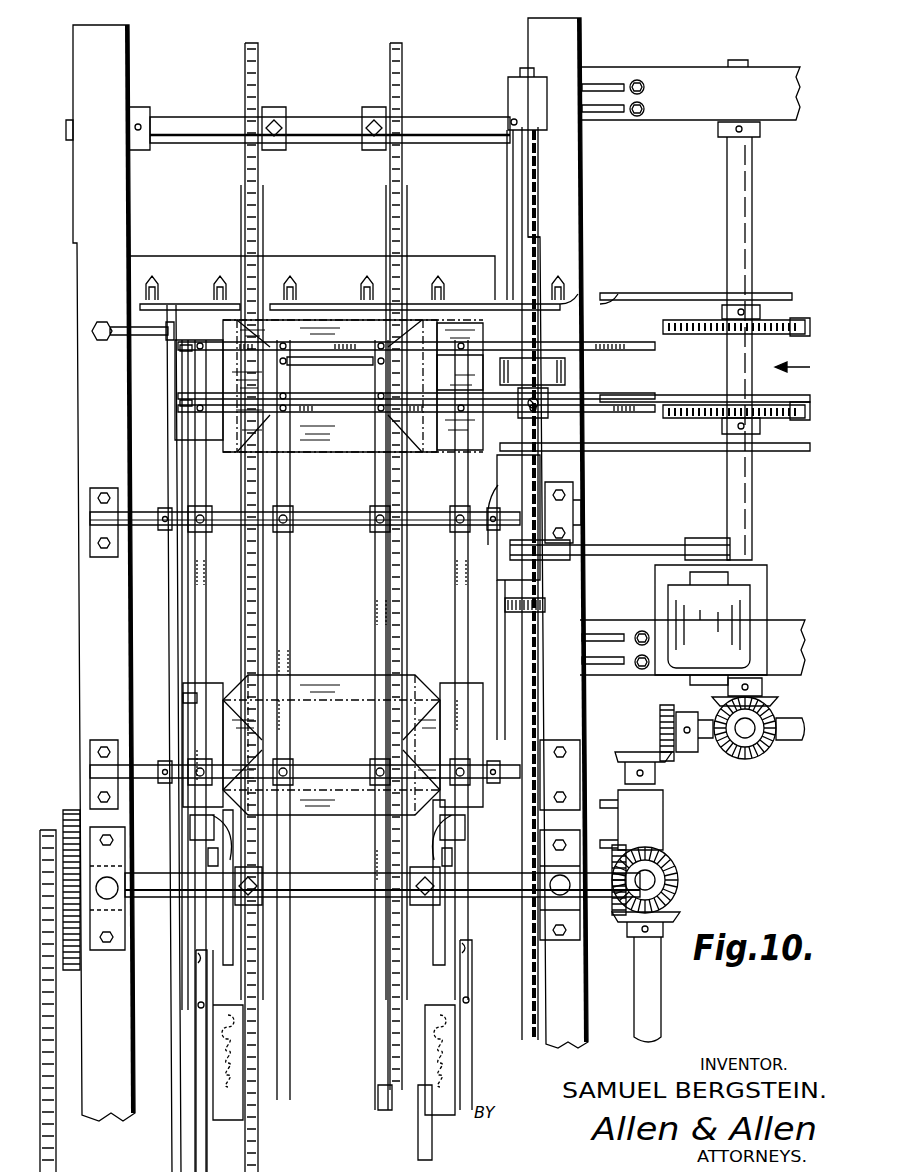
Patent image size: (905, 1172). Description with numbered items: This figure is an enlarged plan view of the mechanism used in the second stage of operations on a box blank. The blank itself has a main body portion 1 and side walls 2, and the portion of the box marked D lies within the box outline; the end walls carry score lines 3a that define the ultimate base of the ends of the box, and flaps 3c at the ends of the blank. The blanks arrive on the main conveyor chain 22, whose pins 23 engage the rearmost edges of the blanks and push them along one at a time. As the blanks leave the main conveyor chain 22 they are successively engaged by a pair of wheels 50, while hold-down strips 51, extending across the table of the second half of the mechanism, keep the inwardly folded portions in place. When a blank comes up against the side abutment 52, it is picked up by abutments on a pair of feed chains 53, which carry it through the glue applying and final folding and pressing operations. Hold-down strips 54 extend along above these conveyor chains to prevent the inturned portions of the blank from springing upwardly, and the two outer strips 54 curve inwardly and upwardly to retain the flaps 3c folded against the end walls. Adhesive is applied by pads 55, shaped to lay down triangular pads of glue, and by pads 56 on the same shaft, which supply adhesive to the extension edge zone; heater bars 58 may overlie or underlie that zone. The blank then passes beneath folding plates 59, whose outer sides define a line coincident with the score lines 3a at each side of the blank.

The main body portion 1 is at (340, 565).
The side walls 2 is at (329, 563).
The box section D is at (305, 381).
The score lines 3a is at (426, 368).
The flaps 3c is at (198, 714).
The endless feed chains 22 is at (704, 320).
The pins 23 is at (762, 325).
The wheels 50 is at (567, 364).
The hold-down strips 51 is at (628, 336).
The side abutment 52 is at (172, 462).
The feed chains 53 is at (330, 240).
The hold-down strips 54 is at (195, 638).
The pads 55 is at (198, 832).
The pads 56 is at (223, 922).
The heater bars 58 is at (430, 1045).
The folding plates 59 is at (420, 1115).